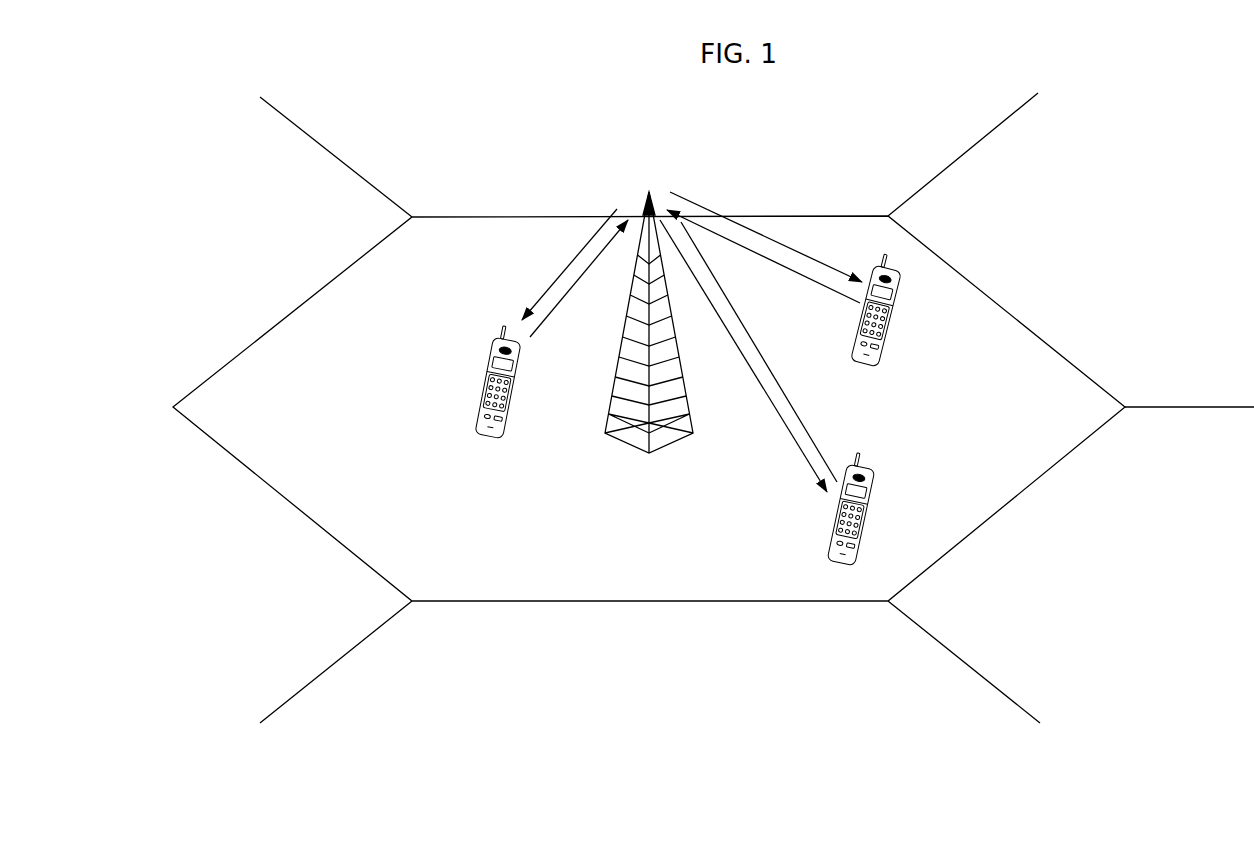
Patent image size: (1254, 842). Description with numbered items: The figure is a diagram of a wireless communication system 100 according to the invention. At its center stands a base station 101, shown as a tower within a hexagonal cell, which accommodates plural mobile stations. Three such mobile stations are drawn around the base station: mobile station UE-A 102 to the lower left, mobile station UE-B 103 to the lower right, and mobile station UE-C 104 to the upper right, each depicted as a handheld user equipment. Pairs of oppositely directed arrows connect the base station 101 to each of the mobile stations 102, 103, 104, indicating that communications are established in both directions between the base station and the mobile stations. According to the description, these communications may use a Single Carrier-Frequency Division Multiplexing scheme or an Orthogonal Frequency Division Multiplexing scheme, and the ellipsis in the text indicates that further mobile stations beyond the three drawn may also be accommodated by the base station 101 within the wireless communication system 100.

The wireless communication system 100 is at (713, 424).
The base station 101 is at (672, 162).
The mobile station 102 is at (450, 387).
The mobile station 103 is at (760, 512).
The mobile station 104 is at (930, 312).